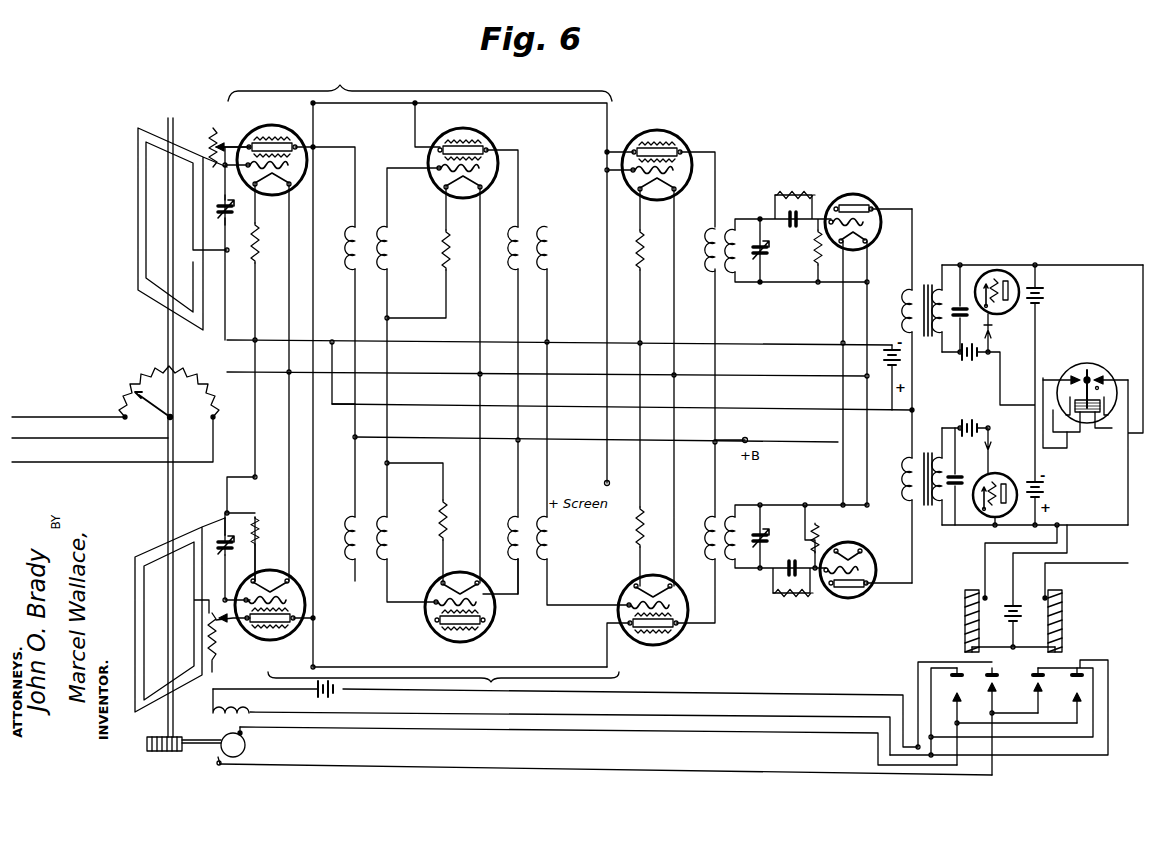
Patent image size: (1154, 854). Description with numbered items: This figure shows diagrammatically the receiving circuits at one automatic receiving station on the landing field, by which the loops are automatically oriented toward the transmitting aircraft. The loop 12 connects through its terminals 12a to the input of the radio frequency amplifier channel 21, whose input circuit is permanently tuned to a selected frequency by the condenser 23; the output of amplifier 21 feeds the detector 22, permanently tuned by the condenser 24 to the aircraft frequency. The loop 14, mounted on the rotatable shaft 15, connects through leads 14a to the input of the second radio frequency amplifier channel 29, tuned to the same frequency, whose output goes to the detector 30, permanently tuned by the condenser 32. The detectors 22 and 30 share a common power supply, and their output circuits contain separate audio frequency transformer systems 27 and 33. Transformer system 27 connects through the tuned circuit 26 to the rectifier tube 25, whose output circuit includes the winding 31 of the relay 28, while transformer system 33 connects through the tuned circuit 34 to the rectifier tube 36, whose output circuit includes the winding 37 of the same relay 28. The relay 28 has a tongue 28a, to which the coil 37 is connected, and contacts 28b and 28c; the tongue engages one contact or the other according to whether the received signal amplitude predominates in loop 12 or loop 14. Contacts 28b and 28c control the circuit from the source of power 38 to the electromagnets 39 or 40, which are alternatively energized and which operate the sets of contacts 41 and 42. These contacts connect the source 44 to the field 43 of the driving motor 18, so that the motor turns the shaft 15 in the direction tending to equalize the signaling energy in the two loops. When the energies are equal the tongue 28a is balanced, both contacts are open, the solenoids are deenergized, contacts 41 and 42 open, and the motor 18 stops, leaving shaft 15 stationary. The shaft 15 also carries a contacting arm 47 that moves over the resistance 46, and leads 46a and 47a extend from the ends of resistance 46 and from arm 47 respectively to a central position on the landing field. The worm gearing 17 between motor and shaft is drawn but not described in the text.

The loop 12 is at (128, 271).
The terminals 12a is at (204, 144).
The loop 14 is at (133, 558).
The leads 14a is at (212, 522).
The rotatable shaft 15 is at (167, 340).
The worm gear 17 is at (150, 750).
The driving motor 18 is at (222, 752).
The radio frequency amplifier channel 21 is at (420, 364).
The detector 22 is at (858, 195).
The condenser 23 is at (236, 218).
The condenser 24 is at (774, 265).
The rectifier tube 25 is at (1005, 268).
The tuned circuit 26 is at (962, 280).
The audio frequency transformer system 27 is at (924, 280).
The relay 28 is at (1095, 395).
The tongue 28a is at (1097, 372).
The contact 28b is at (1070, 378).
The contact 28c is at (1110, 372).
The radio frequency amplifier channel 29 is at (505, 676).
The detector 30 is at (842, 600).
The winding 31 is at (244, 542).
The condenser 32 is at (770, 528).
The audio frequency transformer system 33 is at (924, 510).
The tuned circuit 34 is at (953, 525).
The rectifier tube 36 is at (1005, 482).
The winding 37 is at (1086, 415).
The source of power 38 is at (1020, 605).
The electromagnet 39 is at (962, 625).
The electromagnet 40 is at (1068, 632).
The set of contacts 41 is at (956, 718).
The set of contacts 42 is at (999, 707).
The field 43 is at (255, 720).
The source 44 is at (345, 701).
The resistance 46 is at (210, 384).
The leads 46a is at (75, 457).
The contacting arm 47 is at (158, 418).
The lead 47a is at (34, 431).